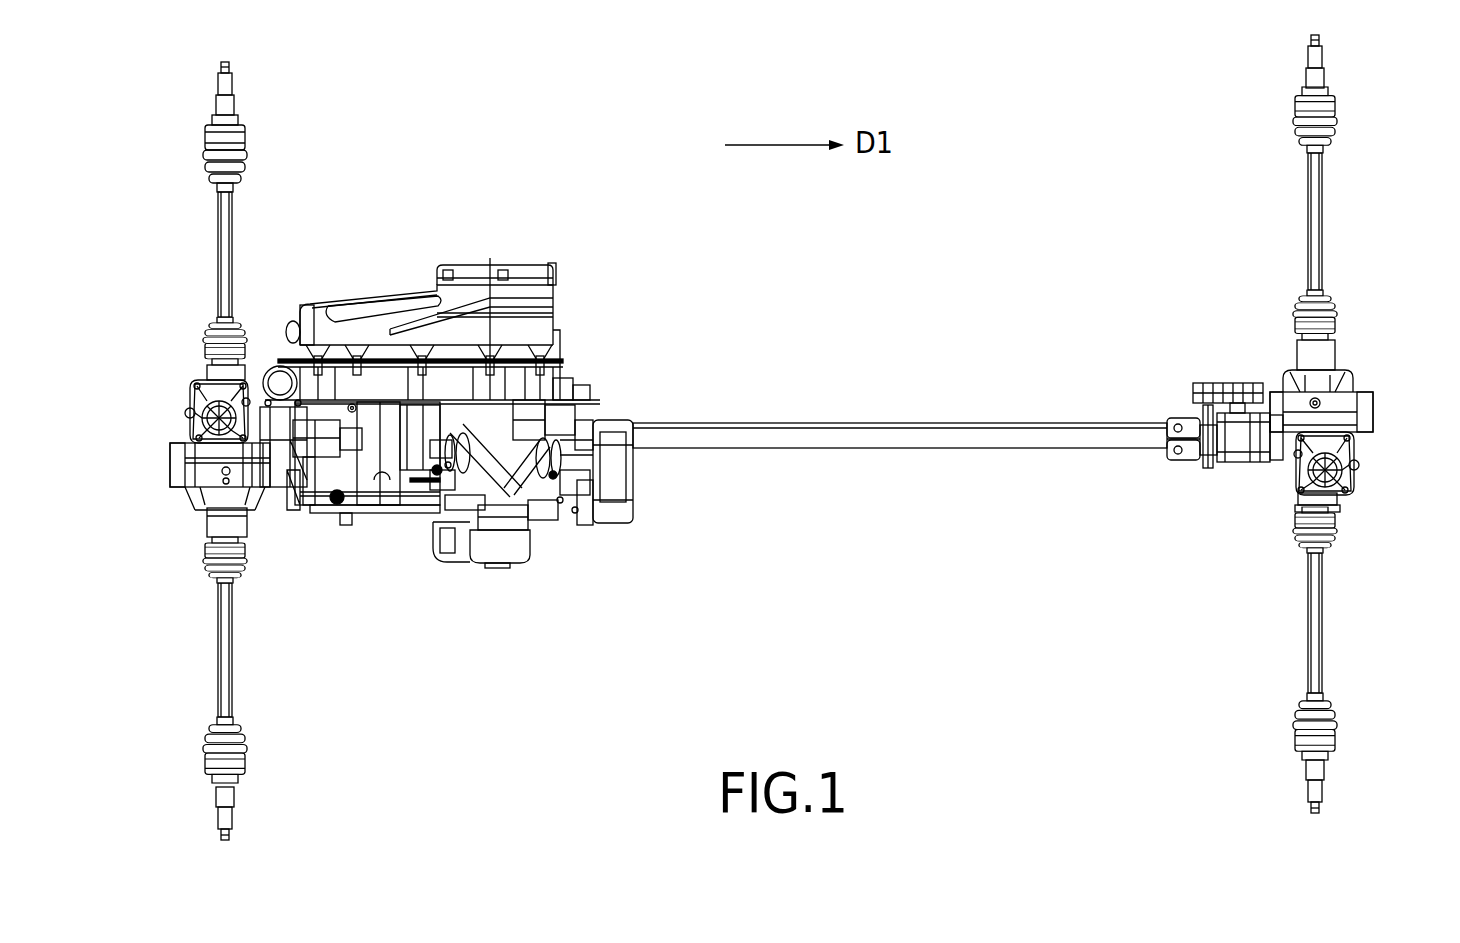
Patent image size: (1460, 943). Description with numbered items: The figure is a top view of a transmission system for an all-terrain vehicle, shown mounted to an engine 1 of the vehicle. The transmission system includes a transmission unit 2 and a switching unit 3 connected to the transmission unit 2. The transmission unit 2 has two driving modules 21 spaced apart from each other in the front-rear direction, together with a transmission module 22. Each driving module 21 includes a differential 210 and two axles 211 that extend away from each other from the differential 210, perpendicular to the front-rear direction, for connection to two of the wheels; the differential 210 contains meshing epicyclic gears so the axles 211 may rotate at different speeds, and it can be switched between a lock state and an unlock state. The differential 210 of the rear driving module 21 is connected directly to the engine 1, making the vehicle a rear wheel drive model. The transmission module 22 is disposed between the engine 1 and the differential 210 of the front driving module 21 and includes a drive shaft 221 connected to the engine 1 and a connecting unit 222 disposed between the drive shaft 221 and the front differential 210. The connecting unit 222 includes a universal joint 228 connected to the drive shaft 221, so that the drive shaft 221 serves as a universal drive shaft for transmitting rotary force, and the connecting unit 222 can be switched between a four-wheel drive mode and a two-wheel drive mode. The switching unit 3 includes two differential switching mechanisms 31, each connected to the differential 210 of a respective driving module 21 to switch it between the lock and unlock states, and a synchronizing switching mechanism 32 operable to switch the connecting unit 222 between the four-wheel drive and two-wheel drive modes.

The engine 1 is at (522, 468).
The transmission unit 2 is at (900, 365).
The driving module 21 is at (152, 482).
The differential 210 is at (198, 447).
The axle 211 is at (218, 229).
The transmission module 22 is at (797, 400).
The drive shaft 221 is at (860, 448).
The connecting unit 222 is at (1152, 488).
The universal joint 228 is at (1180, 418).
The switching unit 3 is at (1205, 346).
The differential switching mechanism 31 is at (195, 402).
The synchronizing switching mechanism 32 is at (1237, 385).